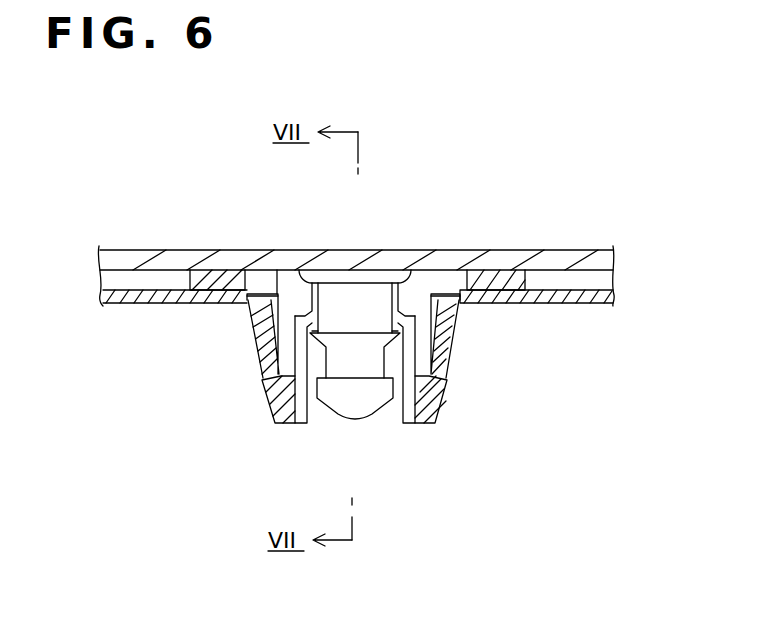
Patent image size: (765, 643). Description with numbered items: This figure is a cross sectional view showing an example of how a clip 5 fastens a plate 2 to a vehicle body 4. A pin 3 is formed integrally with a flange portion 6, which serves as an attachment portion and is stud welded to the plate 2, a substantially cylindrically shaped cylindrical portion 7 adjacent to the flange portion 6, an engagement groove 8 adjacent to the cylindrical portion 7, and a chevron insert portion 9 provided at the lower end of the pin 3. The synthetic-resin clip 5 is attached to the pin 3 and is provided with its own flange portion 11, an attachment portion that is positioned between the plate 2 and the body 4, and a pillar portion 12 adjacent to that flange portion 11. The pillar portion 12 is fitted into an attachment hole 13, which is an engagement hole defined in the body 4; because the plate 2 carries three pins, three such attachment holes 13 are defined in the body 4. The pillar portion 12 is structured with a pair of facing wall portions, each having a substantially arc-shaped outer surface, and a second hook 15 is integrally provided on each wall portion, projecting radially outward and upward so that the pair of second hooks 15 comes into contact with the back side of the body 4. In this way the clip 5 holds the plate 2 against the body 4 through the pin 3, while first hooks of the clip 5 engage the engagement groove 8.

The plate 2 is at (524, 252).
The pin 3 is at (346, 398).
The body 4 is at (578, 298).
The clip 5 is at (258, 383).
The flange portion 6 is at (380, 278).
The cylindrical portion 7 is at (342, 302).
The engagement groove 8 is at (384, 358).
The chevron insert portion 9 is at (334, 410).
The flange portion 11 is at (203, 280).
The pillar portion 12 is at (418, 300).
The attachment hole 13 is at (270, 287).
The second hook 15 is at (255, 307).